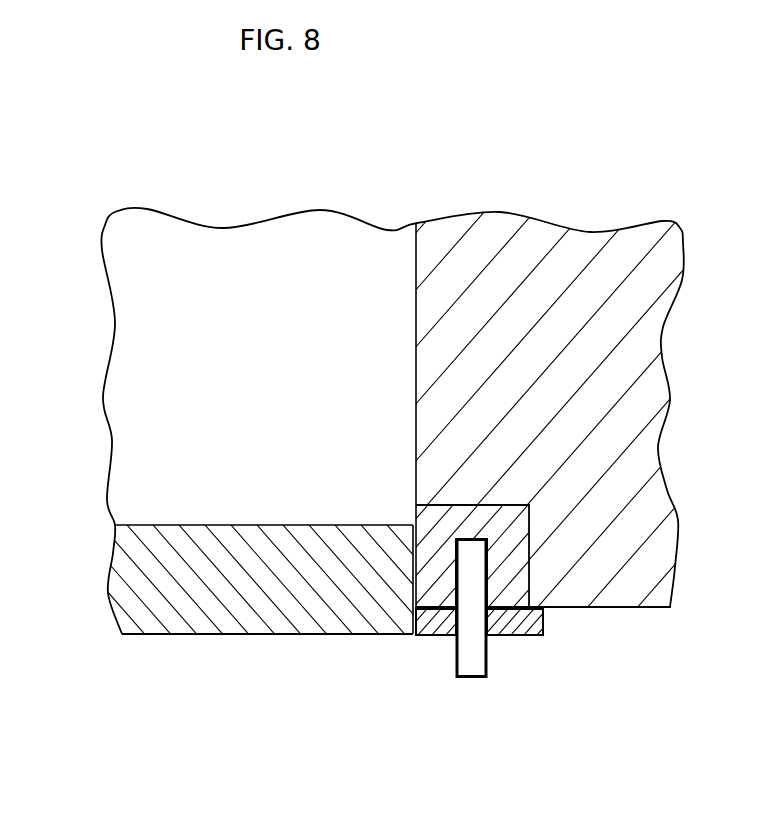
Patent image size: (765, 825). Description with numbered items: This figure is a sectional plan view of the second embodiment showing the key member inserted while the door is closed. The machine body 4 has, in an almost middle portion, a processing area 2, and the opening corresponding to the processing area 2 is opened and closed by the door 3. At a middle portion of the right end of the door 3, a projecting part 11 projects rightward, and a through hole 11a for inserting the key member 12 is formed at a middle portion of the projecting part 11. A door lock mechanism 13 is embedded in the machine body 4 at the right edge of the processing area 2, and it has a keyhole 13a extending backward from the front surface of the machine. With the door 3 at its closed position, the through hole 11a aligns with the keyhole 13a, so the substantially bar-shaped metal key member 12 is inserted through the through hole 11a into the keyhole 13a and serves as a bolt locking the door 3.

The processing area 2 is at (263, 243).
The door 3 is at (120, 587).
The machine body 4 is at (585, 242).
The projecting part 11 is at (432, 627).
The through hole 11a is at (484, 632).
The key member 12 is at (470, 662).
The door lock mechanism 13 is at (515, 538).
The keyhole 13a is at (483, 578).